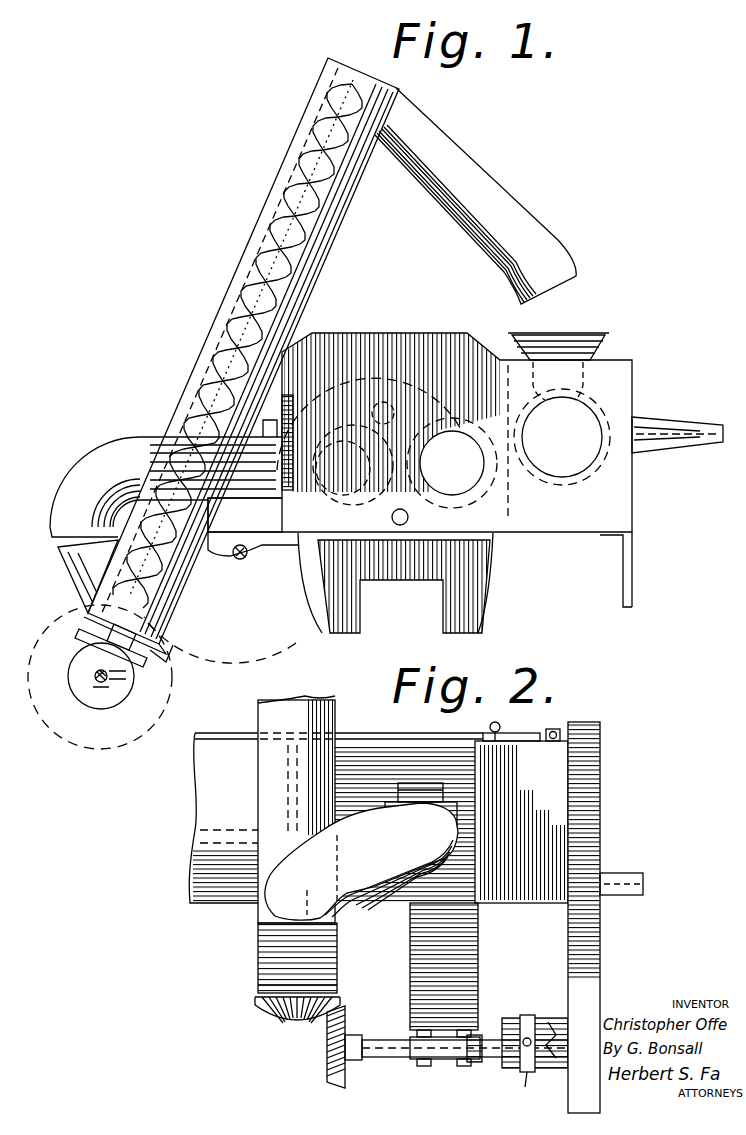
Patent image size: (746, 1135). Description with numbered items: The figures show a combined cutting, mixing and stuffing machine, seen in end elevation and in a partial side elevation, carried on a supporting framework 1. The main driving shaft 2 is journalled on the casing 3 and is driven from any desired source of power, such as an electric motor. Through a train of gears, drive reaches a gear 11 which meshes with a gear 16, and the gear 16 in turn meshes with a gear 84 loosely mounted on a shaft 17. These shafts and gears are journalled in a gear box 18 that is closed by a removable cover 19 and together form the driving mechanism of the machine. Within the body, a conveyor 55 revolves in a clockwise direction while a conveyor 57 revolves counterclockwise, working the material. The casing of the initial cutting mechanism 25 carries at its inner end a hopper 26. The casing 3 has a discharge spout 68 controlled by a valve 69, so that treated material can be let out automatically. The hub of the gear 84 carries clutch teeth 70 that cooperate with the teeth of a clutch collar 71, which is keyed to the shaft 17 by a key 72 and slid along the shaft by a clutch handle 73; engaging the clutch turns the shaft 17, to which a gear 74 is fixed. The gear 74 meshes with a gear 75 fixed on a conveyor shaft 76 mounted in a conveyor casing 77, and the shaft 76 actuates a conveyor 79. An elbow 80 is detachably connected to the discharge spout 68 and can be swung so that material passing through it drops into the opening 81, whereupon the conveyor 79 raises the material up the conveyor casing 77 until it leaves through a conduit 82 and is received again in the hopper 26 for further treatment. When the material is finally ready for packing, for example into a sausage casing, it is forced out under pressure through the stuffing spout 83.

In FIG. 1, the supporting framework 1 is at (520, 556).
In FIG. 1, the main driving shaft 2 is at (410, 519).
In FIG. 2, the casing 3 is at (205, 834).
In FIG. 1, the gear 11 is at (432, 334).
In FIG. 1, the gear 16 is at (300, 642).
In FIG. 1, the shaft 17 is at (92, 676).
In FIG. 2, the shaft 17 is at (398, 1027).
In FIG. 1, the gear box 18 is at (603, 503).
In FIG. 2, the gear box 18 is at (489, 885).
In FIG. 2, the removable cover 19 is at (533, 732).
In FIG. 1, the casing of the initial cutting mechanism 25 is at (603, 407).
In FIG. 1, the hopper 26 is at (577, 328).
In FIG. 1, the conveyor 55 is at (492, 490).
In FIG. 1, the conveyor 57 is at (345, 405).
In FIG. 1, the discharge spout 68 is at (245, 515).
In FIG. 2, the discharge spout 68 is at (452, 798).
In FIG. 1, the valve 69 is at (330, 330).
In FIG. 2, the valve 69 is at (418, 773).
In FIG. 2, the clutch teeth 70 is at (560, 1018).
In FIG. 2, the clutch collar 71 is at (512, 1030).
In FIG. 2, the key 72 is at (490, 1065).
In FIG. 2, the clutch handle 73 is at (527, 1073).
In FIG. 1, the gear 74 is at (110, 698).
In FIG. 2, the gear 74 is at (323, 1064).
In FIG. 1, the gear 75 is at (140, 667).
In FIG. 2, the gear 75 is at (270, 1020).
In FIG. 1, the conveyor shaft 76 is at (172, 645).
In FIG. 2, the conveyor shaft 76 is at (302, 1032).
In FIG. 1, the conveyor casing 77 is at (237, 273).
In FIG. 2, the conveyor casing 77 is at (268, 779).
In FIG. 1, the conveyor 79 is at (287, 224).
In FIG. 1, the elbow 80 is at (97, 446).
In FIG. 2, the elbow 80 is at (361, 861).
In FIG. 1, the opening 81 is at (78, 567).
In FIG. 2, the opening 81 is at (277, 951).
In FIG. 1, the conduit 82 is at (467, 175).
In FIG. 1, the stuffing spout 83 is at (688, 415).
In FIG. 2, the stuffing spout 83 is at (605, 917).
In FIG. 1, the gear 84 is at (103, 750).